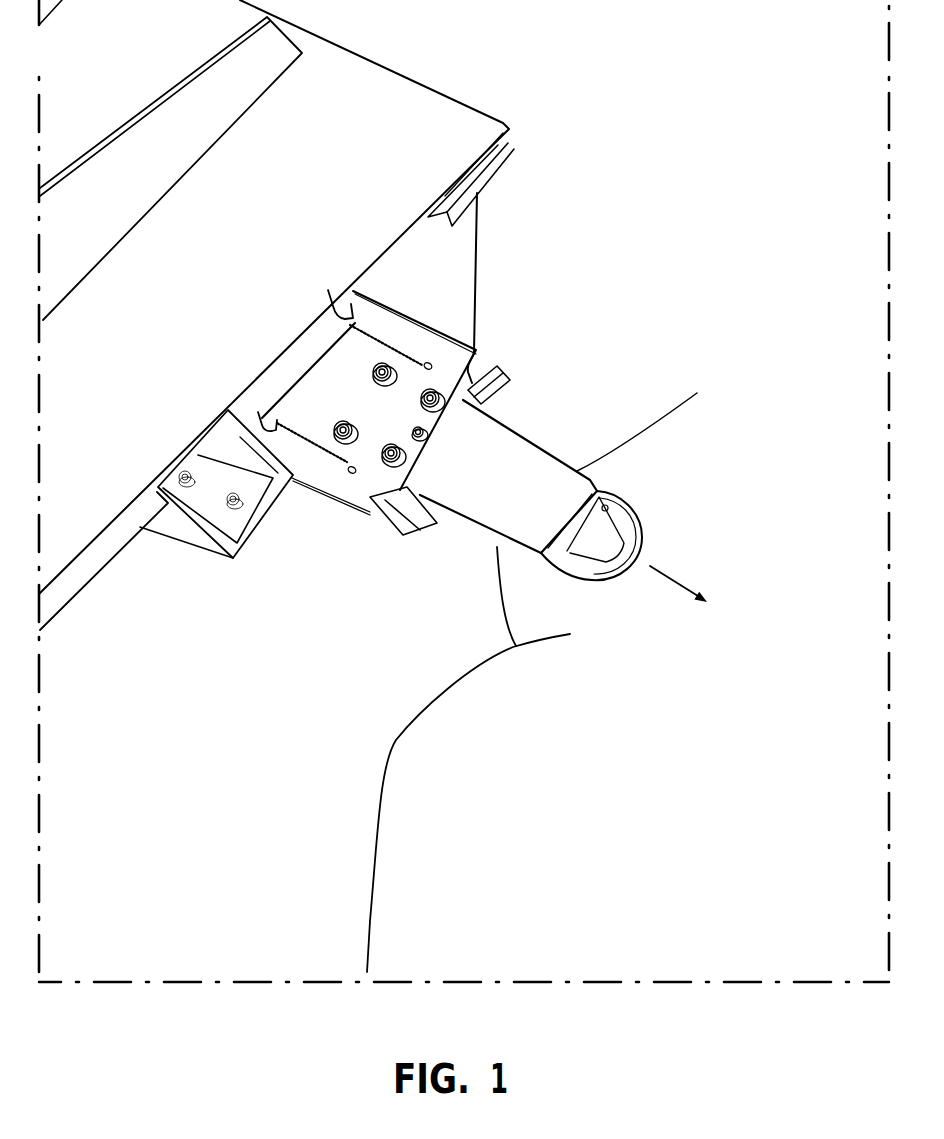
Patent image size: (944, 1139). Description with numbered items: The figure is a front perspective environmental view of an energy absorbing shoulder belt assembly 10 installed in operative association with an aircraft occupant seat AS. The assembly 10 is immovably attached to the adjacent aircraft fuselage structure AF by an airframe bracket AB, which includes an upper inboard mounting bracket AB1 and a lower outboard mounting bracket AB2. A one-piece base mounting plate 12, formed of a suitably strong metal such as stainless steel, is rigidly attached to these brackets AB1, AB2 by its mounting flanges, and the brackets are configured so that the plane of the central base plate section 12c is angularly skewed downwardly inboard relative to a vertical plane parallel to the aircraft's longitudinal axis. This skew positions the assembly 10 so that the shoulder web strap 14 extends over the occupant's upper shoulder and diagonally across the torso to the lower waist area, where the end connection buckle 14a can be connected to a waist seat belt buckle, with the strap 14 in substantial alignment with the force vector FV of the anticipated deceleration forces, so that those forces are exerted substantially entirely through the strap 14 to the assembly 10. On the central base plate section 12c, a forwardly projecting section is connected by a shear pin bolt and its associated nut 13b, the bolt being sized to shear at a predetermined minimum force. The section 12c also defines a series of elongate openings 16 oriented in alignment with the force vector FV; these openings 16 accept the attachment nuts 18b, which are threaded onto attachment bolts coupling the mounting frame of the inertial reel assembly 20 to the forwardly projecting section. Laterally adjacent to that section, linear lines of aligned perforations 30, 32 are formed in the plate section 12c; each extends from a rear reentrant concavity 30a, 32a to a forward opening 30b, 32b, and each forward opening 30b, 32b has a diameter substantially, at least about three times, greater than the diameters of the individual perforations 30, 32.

The energy absorbing shoulder belt assembly 10 is at (384, 610).
The base mounting plate 12 is at (490, 262).
The central base plate section 12c is at (346, 393).
The nut 13b is at (427, 436).
The shoulder web strap 14 is at (526, 503).
The end connection buckle 14a is at (618, 508).
The elongate openings 16 is at (442, 402).
The attachment nuts 18b is at (372, 368).
The inertial reel assembly 20 is at (502, 398).
The perforations 30 is at (400, 340).
The rear reentrant concavity 30a is at (328, 290).
The forward opening 30b is at (432, 364).
The perforations 32 is at (326, 466).
The rear reentrant concavity 32a is at (262, 428).
The forward opening 32b is at (352, 474).
The airframe bracket AB is at (324, 137).
The upper inboard mounting bracket AB1 is at (497, 155).
The lower outboard mounting bracket AB2 is at (180, 532).
The aircraft fuselage structure AF is at (113, 202).
The aircraft occupant seat AS is at (420, 861).
The force vector FV is at (689, 585).